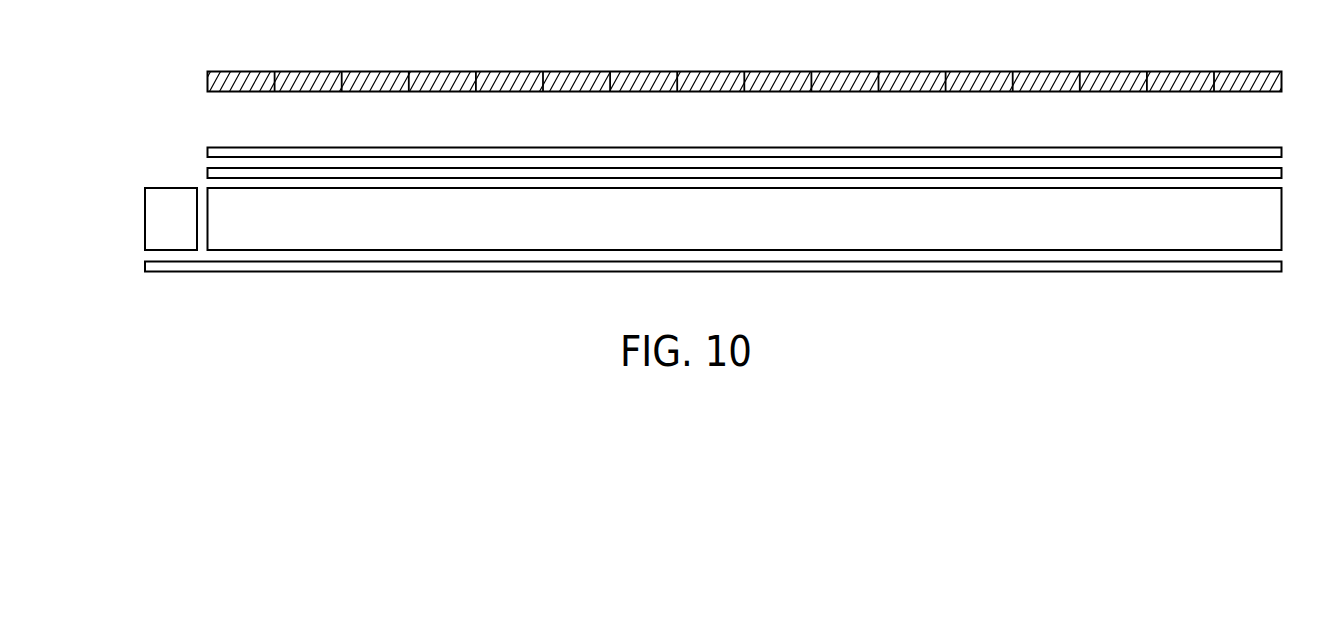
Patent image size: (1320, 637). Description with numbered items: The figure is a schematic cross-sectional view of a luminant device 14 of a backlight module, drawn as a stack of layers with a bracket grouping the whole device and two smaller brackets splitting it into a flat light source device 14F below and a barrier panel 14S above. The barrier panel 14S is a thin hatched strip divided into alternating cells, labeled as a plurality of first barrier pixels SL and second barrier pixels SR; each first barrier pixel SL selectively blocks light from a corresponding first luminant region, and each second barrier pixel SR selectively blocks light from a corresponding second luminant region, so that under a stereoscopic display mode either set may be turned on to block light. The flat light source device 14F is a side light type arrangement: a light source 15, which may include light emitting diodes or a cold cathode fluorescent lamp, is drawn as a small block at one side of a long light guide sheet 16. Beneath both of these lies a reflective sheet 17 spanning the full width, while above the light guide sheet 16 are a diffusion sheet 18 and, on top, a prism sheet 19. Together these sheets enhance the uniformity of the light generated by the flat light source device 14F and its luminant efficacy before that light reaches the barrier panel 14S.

The luminant device 14 is at (91, 64).
The barrier panel 14S is at (142, 68).
The flat light source device 14F is at (143, 148).
The light source 15 is at (161, 233).
The light guide sheet 16 is at (742, 234).
The reflective sheet 17 is at (1283, 266).
The diffusion sheet 18 is at (1283, 173).
The prism sheet 19 is at (1283, 152).
The first barrier pixel SL is at (239, 92).
The second barrier pixel SR is at (306, 92).